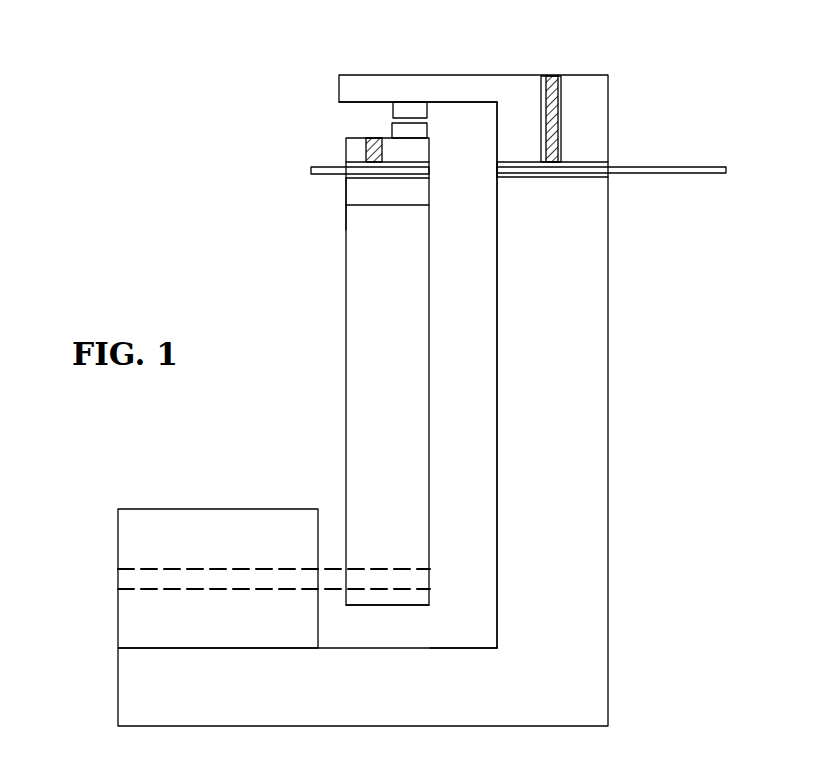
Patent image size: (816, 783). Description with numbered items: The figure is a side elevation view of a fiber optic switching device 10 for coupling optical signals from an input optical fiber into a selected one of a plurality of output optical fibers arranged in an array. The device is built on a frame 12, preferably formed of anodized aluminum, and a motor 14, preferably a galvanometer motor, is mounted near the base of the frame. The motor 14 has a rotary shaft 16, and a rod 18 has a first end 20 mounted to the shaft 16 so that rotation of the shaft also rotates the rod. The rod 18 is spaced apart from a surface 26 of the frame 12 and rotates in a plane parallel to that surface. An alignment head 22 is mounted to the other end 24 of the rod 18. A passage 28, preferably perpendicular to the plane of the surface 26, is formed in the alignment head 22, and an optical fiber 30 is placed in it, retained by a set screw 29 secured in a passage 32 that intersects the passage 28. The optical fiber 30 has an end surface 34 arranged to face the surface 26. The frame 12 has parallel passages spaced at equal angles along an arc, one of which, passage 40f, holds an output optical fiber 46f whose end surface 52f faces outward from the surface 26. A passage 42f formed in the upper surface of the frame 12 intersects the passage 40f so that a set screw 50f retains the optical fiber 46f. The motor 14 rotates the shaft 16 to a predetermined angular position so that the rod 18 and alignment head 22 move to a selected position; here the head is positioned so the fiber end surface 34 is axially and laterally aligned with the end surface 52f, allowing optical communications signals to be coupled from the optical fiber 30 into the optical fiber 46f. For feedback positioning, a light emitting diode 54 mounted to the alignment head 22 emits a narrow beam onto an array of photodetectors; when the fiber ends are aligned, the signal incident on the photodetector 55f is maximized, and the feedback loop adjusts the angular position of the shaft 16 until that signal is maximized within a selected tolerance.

The fiber optic switching device 10 is at (190, 108).
The frame 12 is at (608, 357).
The motor 14 is at (160, 508).
The rotary shaft 16 is at (333, 578).
The rod 18 is at (346, 372).
The first end 20 is at (382, 597).
The alignment head 22 is at (208, 172).
The other end 24 is at (346, 212).
The surface 26 is at (496, 317).
The passage 28 is at (346, 166).
The set screw 29 is at (380, 137).
The optical fiber 30 is at (335, 178).
The passage 32 is at (365, 138).
The end surface 34 is at (430, 169).
The passage 40f is at (595, 165).
The passage 42f is at (553, 77).
The optical fiber 46f is at (665, 167).
The set screw 50f is at (560, 125).
The end surface 52f is at (497, 169).
The light emitting diode 54 is at (398, 117).
The photodetector 55f is at (415, 102).